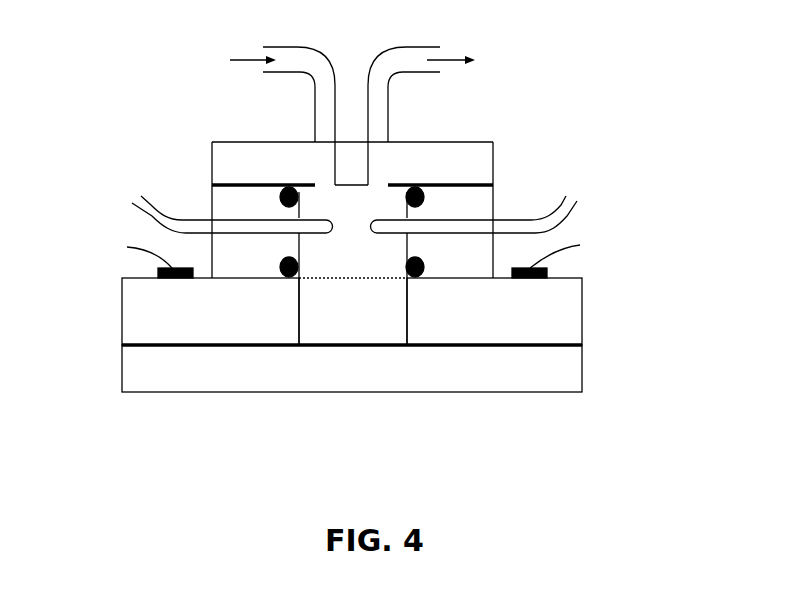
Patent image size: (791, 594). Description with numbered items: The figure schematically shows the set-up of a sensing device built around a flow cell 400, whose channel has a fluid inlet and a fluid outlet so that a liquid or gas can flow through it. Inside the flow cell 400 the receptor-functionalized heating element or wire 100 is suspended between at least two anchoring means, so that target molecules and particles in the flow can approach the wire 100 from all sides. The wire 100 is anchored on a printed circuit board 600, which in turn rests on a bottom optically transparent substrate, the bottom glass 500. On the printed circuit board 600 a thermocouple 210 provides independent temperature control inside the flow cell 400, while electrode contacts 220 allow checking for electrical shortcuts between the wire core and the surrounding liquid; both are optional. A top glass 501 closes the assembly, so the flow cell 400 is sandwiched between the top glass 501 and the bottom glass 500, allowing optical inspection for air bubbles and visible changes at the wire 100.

The wire 100 is at (353, 291).
The thermocouple 210 is at (125, 250).
The electrode contacts 220 is at (590, 250).
The flow cell 400 is at (506, 193).
The bottom glass 500 is at (352, 368).
The top glass 501 is at (360, 162).
The printed circuit board 600 is at (122, 308).